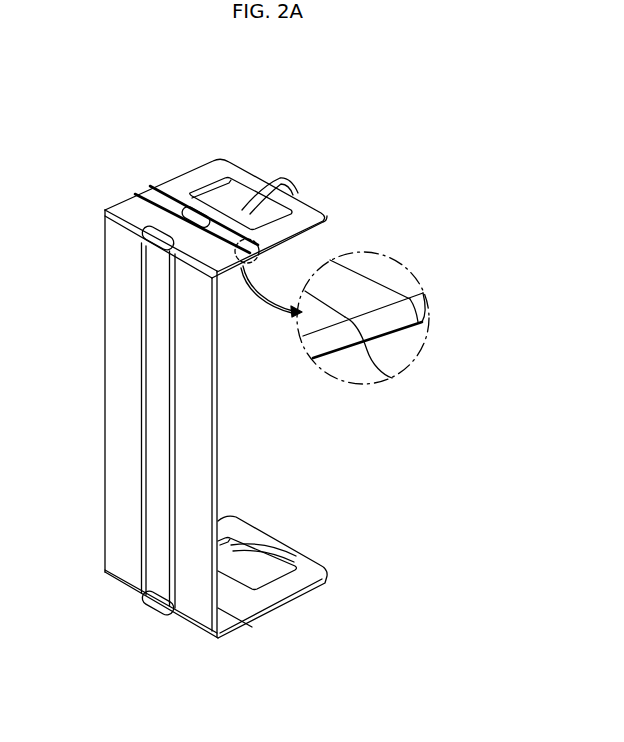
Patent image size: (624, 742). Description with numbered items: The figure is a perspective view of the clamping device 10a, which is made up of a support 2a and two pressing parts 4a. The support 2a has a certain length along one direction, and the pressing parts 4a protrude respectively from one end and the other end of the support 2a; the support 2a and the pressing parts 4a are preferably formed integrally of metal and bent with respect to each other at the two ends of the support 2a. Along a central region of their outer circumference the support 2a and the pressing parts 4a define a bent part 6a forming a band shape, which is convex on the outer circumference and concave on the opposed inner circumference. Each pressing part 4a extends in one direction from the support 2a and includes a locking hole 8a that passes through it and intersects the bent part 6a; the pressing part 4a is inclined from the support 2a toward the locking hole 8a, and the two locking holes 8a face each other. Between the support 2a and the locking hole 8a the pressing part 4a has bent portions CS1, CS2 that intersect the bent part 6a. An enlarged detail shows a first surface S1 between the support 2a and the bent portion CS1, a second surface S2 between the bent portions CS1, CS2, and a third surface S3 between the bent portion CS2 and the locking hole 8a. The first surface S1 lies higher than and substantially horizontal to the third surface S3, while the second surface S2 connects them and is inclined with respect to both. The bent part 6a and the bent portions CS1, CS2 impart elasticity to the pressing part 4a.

The clamping device 10a is at (160, 96).
The support 2a is at (122, 505).
The bent part 6a is at (156, 323).
The pressing part 4a is at (185, 171).
The locking hole 8a is at (246, 210).
The first surface S1 is at (301, 325).
The second surface S2 is at (330, 282).
The third surface S3 is at (392, 270).
The bent portion CS1 is at (392, 378).
The bent portion CS2 is at (422, 322).